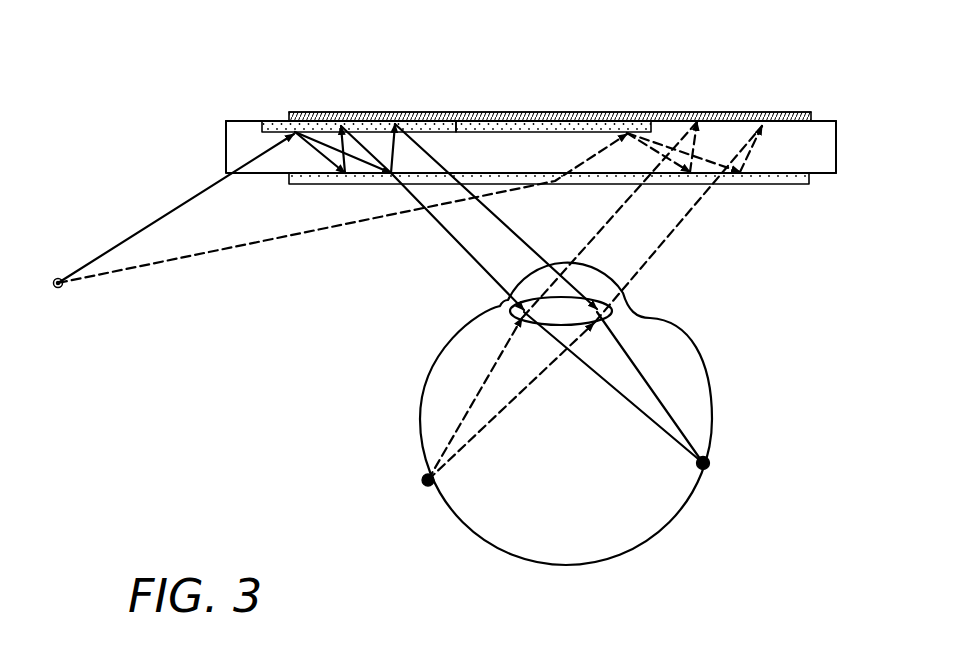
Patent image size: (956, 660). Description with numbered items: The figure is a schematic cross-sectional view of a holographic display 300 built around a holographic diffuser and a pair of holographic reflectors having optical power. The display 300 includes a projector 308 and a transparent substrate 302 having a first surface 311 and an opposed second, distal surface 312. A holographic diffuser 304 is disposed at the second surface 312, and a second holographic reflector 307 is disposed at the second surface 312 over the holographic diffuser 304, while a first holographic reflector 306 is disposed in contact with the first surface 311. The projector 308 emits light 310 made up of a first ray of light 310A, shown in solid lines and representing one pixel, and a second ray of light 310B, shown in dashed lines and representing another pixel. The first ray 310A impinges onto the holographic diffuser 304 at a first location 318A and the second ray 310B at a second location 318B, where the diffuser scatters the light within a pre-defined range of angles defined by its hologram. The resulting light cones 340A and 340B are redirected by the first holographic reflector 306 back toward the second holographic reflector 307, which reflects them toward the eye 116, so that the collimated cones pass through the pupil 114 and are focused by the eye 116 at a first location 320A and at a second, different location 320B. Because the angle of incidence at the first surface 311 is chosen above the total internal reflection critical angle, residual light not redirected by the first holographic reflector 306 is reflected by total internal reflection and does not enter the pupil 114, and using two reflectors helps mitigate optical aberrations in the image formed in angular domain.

The display 300 is at (495, 227).
The substrate 302 is at (242, 148).
The holographic diffuser 304 is at (467, 125).
The first holographic reflector 306 is at (750, 185).
The second holographic reflector 307 is at (522, 112).
The projector 308 is at (58, 290).
The light 310 is at (342, 230).
The first ray of light 310A is at (112, 253).
The second ray of light 310B is at (242, 245).
The first surface 311 is at (818, 174).
The second surface 312 is at (240, 120).
The first location 318A is at (297, 121).
The second location 318B is at (632, 121).
The light cone 340A is at (325, 145).
The light cone 340B is at (656, 118).
The pupil 114 is at (650, 318).
The eye 116 is at (581, 497).
The first location 320A is at (710, 467).
The second location 320B is at (421, 482).